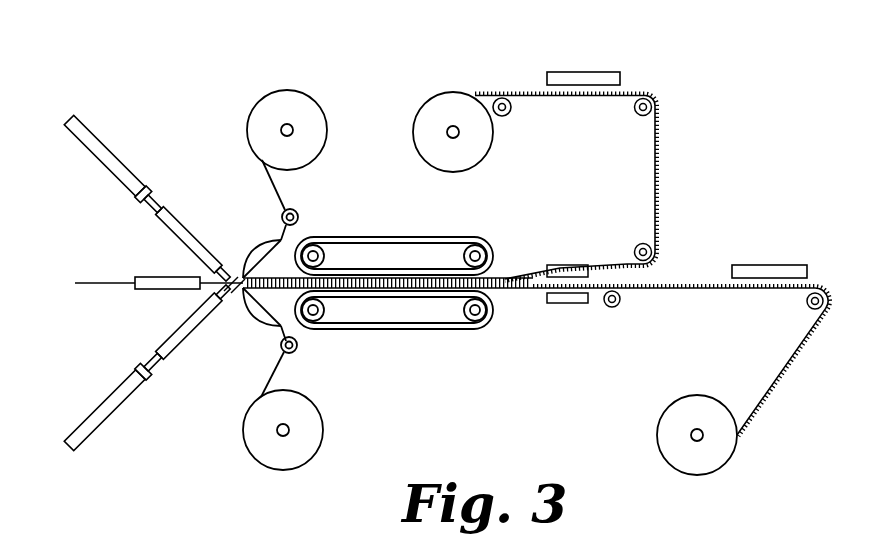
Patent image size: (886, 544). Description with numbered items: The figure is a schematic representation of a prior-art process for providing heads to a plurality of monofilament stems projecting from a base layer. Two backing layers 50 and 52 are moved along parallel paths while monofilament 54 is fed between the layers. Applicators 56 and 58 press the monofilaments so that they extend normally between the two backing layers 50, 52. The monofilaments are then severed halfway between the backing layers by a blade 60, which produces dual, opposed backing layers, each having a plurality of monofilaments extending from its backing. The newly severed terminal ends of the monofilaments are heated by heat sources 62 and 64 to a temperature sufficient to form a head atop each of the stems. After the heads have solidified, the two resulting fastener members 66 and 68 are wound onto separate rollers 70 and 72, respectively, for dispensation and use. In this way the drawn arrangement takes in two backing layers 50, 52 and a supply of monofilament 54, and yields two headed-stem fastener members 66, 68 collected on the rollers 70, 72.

The backing layer 50 is at (282, 191).
The backing layer 52 is at (283, 368).
The monofilament 54 is at (214, 278).
The applicator 56 is at (182, 228).
The applicator 58 is at (198, 318).
The blade 60 is at (536, 281).
The heat source 62 is at (600, 73).
The heat source 64 is at (780, 266).
The fastener member 66 is at (493, 97).
The fastener member 68 is at (740, 433).
The roller 70 is at (435, 108).
The roller 72 is at (712, 463).